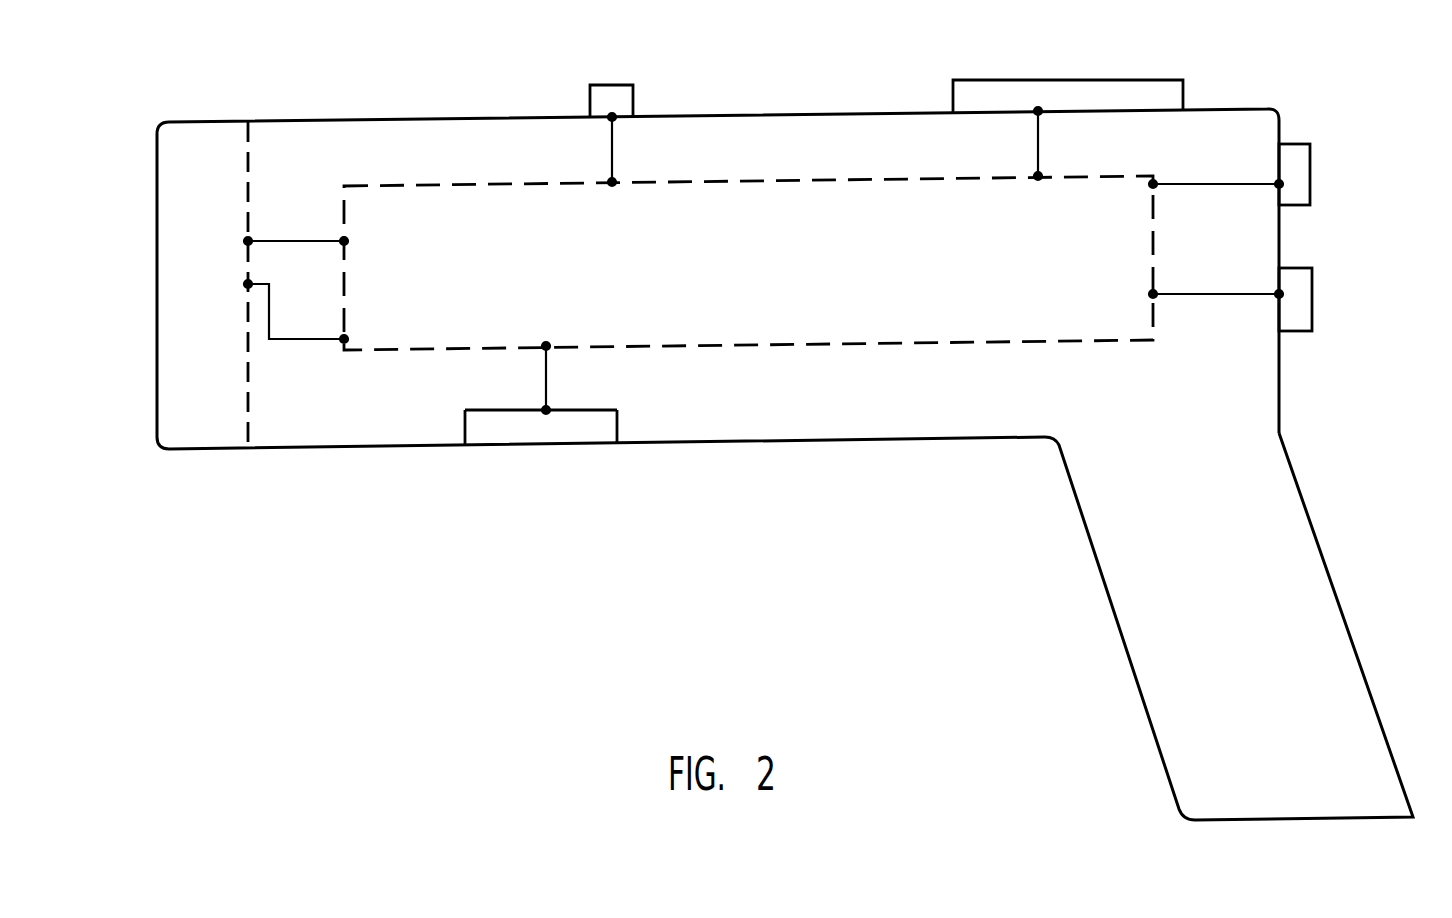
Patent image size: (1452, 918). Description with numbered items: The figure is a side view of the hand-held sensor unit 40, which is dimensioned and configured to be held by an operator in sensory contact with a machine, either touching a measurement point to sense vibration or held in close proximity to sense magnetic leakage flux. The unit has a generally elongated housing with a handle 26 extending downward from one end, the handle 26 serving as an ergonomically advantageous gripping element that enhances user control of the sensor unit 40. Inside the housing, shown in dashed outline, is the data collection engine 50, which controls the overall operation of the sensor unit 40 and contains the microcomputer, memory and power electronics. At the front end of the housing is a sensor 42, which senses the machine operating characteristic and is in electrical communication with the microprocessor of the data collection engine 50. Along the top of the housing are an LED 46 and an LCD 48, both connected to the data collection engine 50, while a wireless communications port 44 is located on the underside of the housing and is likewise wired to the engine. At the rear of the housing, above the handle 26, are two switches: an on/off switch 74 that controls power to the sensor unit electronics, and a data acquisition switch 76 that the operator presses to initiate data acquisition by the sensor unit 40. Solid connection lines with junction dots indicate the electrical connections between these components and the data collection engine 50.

The handle 26 is at (1310, 661).
The hand-held sensor unit 40 is at (413, 108).
The sensor 42 is at (200, 425).
The wireless communications port 44 is at (573, 427).
The LED 46 is at (618, 85).
The LCD 48 is at (1105, 80).
The data collection engine 50 is at (738, 176).
The on/off switch 74 is at (1310, 168).
The data acquisition switch 76 is at (1312, 295).